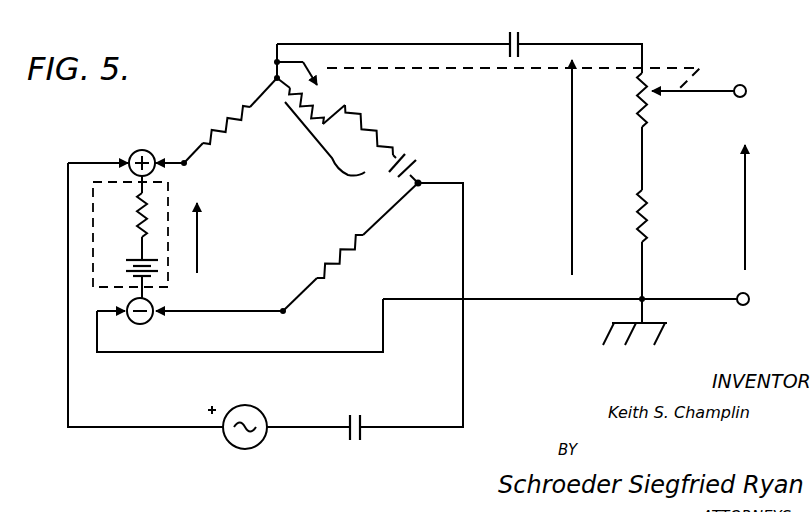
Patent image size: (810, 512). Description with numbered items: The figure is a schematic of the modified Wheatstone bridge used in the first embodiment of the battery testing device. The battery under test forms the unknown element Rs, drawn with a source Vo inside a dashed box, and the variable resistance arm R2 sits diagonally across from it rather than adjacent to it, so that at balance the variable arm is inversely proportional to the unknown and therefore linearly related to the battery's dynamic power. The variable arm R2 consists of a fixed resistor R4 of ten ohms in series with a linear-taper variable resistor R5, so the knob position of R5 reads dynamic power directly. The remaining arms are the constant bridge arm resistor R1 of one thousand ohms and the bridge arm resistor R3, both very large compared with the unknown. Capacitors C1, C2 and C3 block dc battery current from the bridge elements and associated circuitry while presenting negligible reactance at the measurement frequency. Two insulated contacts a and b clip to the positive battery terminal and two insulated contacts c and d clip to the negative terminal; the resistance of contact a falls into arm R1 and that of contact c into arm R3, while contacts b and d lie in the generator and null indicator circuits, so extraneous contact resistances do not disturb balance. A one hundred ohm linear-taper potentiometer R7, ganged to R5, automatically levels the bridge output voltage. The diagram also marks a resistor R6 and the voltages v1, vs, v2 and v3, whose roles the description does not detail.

The bridge arm resistor R1 is at (222, 125).
The variable resistance arm R2 is at (325, 145).
The bridge arm resistor R3 is at (347, 256).
The fixed resistor R4 is at (379, 130).
The variable resistor R5 is at (317, 106).
The resistor R6 is at (655, 216).
The potentiometer R7 is at (668, 100).
The capacitor C1 is at (351, 416).
The capacitor C2 is at (418, 162).
The capacitor C3 is at (531, 41).
The unknown element Rs is at (123, 215).
The battery voltage Vo is at (127, 263).
The input voltage source v1(t) v1 is at (237, 443).
The source voltage v's(t) vs is at (219, 238).
The voltage v2(t) v2 is at (543, 167).
The output voltage v3(t) v3 is at (769, 207).
The insulated contact a is at (158, 155).
The insulated contact b is at (130, 157).
The insulated contact c is at (150, 321).
The insulated contact d is at (131, 321).